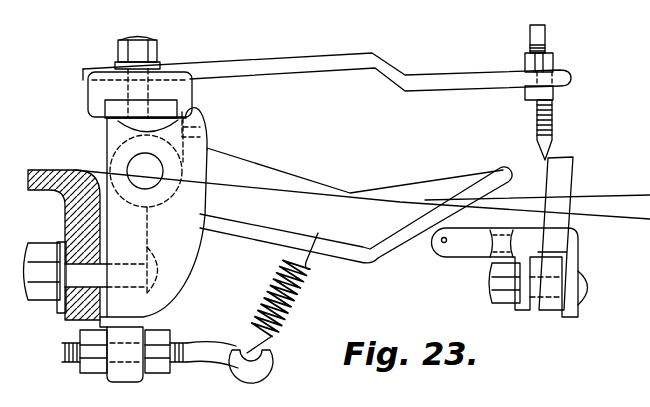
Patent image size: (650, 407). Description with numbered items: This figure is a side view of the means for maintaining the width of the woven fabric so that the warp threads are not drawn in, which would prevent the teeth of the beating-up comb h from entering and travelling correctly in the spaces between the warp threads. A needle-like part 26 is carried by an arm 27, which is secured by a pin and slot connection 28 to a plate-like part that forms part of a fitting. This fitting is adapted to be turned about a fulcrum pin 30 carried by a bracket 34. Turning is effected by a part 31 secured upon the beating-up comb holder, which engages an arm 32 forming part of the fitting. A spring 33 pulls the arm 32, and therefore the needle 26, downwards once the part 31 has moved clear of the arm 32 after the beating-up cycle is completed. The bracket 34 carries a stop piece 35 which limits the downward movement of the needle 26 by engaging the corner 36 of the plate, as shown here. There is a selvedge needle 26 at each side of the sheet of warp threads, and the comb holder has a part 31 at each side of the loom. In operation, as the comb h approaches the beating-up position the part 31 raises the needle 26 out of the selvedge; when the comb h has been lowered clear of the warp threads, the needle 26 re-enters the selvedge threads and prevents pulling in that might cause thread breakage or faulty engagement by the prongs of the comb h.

The needle-like part 26 is at (537, 130).
The arm 27 is at (446, 80).
The pin and slot connection 28 is at (118, 50).
The fulcrum pin 30 is at (130, 168).
The part secured upon the beating-up comb holder 31 is at (453, 247).
The arm 32 is at (377, 257).
The spring 33 is at (288, 305).
The bracket 34 is at (140, 237).
The stop piece 35 is at (200, 124).
The corner of the plate 36 is at (183, 100).
The beating-up comb n is at (558, 183).